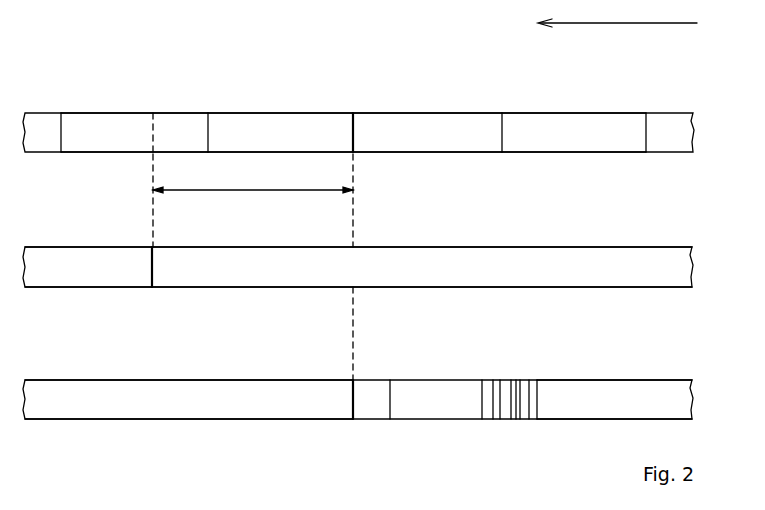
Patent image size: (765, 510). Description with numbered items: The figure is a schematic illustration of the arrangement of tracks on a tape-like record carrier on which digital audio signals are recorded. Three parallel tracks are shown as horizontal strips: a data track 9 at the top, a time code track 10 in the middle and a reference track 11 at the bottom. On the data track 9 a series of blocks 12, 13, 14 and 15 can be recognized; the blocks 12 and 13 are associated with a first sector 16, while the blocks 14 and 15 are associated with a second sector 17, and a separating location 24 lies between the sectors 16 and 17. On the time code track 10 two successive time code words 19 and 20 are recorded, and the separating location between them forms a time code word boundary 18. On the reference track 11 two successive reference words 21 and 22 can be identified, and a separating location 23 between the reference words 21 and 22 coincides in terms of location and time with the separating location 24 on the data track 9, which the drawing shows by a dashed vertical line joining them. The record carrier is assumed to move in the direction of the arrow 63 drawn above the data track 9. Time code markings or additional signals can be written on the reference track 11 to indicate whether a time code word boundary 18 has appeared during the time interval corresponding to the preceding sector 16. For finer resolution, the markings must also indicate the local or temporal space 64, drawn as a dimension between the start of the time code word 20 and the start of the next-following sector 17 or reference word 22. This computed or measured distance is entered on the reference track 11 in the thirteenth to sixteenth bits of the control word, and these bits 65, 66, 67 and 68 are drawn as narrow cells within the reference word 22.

The data track 9 is at (715, 139).
The time code track 10 is at (716, 274).
The reference track 11 is at (718, 404).
The block 12 is at (104, 118).
The block 13 is at (281, 118).
The block 14 is at (430, 118).
The block 15 is at (572, 120).
The first sector 16 is at (178, 86).
The second sector 17 is at (500, 93).
The time code word boundary 18 is at (151, 257).
The time code word 19 is at (70, 247).
The time code word 20 is at (427, 247).
The reference word 21 is at (165, 380).
The reference word 22 is at (570, 383).
The separating location 23 is at (354, 389).
The separating location 24 is at (355, 124).
The arrow 63 is at (610, 24).
The space 64 is at (250, 191).
The bit 65 is at (505, 383).
The bit 66 is at (514, 419).
The bit 67 is at (523, 383).
The bit 68 is at (533, 419).